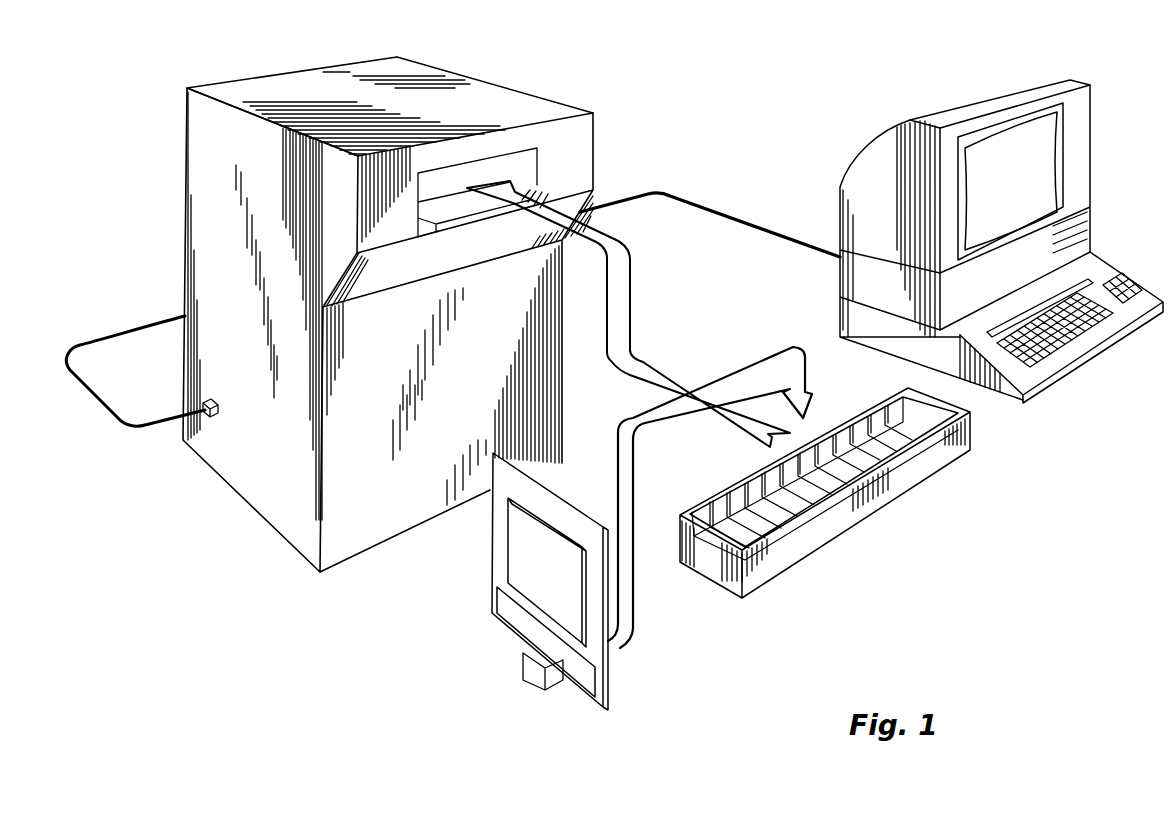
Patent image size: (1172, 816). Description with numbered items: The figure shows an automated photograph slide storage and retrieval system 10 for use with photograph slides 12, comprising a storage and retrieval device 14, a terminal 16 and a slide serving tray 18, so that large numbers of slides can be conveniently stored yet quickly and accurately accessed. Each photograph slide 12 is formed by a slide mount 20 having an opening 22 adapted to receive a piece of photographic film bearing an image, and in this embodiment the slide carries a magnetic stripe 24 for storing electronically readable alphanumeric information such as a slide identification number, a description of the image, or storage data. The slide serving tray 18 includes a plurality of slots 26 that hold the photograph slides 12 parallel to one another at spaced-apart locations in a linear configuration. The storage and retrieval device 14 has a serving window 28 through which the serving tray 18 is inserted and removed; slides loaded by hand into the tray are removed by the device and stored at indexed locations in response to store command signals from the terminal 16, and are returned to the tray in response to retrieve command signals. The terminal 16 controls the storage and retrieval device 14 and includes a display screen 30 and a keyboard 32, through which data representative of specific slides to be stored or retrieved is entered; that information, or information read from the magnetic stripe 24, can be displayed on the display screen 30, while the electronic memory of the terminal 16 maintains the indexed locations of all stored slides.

The automated photograph slide storage and retrieval system 10 is at (798, 57).
The photograph slide 12 is at (492, 552).
The storage and retrieval device 14 is at (413, 72).
The terminal 16 is at (1093, 153).
The slide serving tray 18 is at (832, 480).
The slide mount 20 is at (577, 510).
The opening 22 is at (548, 575).
The magnetic stripe 24 is at (587, 673).
The slots 26 is at (853, 432).
The serving window 28 is at (447, 178).
The display screen 30 is at (1002, 138).
The keyboard 32 is at (1093, 327).